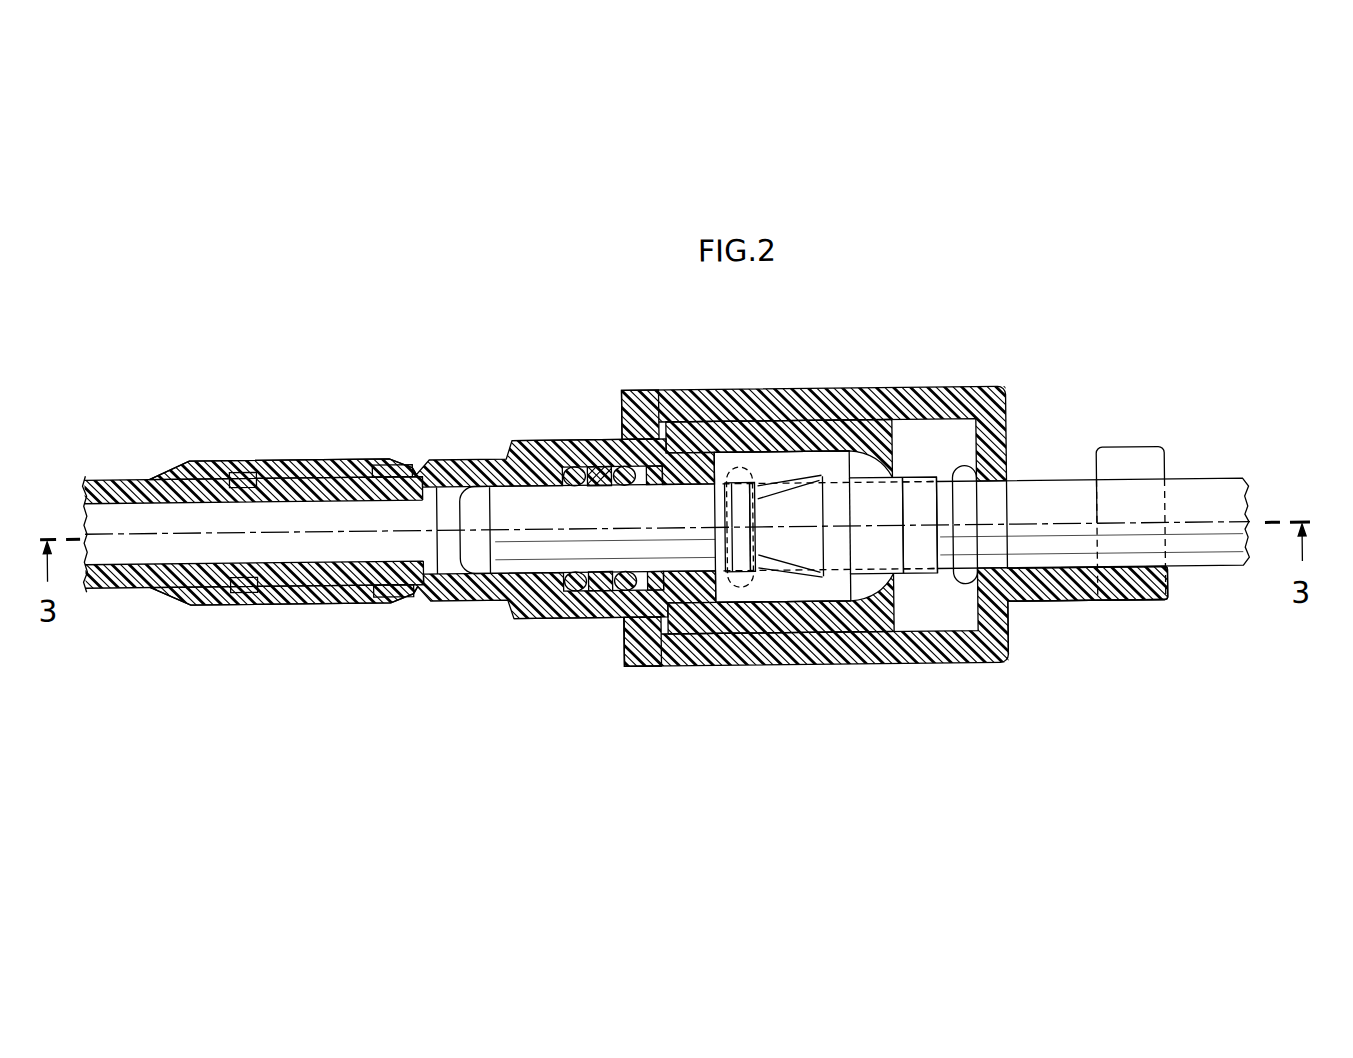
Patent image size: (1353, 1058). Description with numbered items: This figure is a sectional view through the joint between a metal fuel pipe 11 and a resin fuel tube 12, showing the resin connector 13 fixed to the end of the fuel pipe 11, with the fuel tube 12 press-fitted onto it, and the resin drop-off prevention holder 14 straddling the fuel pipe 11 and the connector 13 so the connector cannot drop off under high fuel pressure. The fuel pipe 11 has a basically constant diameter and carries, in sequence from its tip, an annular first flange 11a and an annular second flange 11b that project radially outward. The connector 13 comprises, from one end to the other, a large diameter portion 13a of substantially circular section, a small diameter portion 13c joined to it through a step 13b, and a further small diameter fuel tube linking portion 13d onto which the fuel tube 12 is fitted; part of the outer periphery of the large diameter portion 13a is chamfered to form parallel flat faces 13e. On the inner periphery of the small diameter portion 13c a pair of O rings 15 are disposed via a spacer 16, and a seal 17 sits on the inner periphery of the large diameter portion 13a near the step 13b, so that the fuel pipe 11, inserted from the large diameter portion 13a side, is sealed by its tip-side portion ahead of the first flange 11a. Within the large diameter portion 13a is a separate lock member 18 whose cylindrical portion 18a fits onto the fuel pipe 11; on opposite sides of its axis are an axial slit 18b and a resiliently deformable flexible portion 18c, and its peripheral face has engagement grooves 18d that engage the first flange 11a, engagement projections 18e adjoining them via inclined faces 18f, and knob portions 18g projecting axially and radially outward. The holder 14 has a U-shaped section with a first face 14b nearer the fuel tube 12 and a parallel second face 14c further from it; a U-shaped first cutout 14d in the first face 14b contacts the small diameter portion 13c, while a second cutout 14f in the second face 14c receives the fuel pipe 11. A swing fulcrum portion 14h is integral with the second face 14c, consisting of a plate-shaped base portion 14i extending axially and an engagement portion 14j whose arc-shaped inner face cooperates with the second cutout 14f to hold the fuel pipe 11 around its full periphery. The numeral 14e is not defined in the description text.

The fuel pipe 11 is at (1037, 479).
The first flange 11a is at (743, 519).
The second flange 11b is at (915, 476).
The fuel tube 12 is at (152, 474).
The connector 13 is at (518, 434).
The large diameter portion 13a is at (703, 423).
The step 13b is at (633, 390).
The small diameter portion 13c is at (541, 446).
The fuel tube linking portion 13d is at (283, 459).
The flat face 13e is at (858, 425).
The drop-off prevention holder 14 is at (925, 386).
The first face 14b is at (627, 648).
The second face 14c is at (1007, 634).
The first cutout 14d is at (640, 606).
The housing claw portion 14e is at (617, 449).
The second cutout 14f is at (993, 487).
The swing fulcrum portion 14h is at (1087, 617).
The base portion 14i is at (1068, 592).
The engagement portion 14j is at (1147, 472).
The O ring 15 is at (570, 486).
The spacer 16 is at (597, 482).
The seal 17 is at (670, 480).
The lock member 18 is at (963, 473).
The cylindrical portion 18a is at (793, 590).
The slit 18b is at (743, 596).
The flexible portion 18c is at (813, 452).
The engagement groove 18d is at (750, 544).
The engagement projection 18e is at (840, 539).
The inclined face 18f is at (815, 524).
The knob portion 18g is at (915, 565).